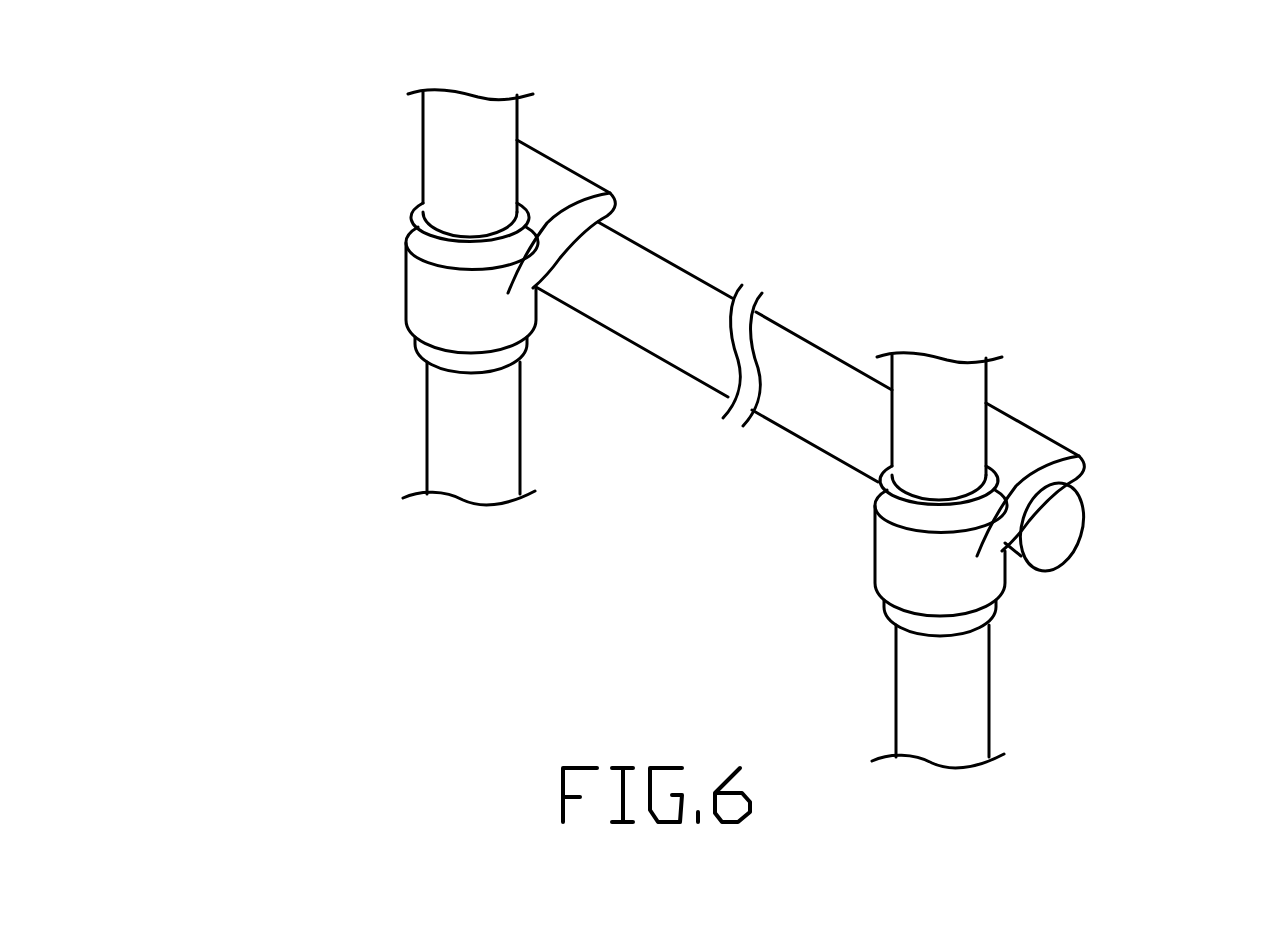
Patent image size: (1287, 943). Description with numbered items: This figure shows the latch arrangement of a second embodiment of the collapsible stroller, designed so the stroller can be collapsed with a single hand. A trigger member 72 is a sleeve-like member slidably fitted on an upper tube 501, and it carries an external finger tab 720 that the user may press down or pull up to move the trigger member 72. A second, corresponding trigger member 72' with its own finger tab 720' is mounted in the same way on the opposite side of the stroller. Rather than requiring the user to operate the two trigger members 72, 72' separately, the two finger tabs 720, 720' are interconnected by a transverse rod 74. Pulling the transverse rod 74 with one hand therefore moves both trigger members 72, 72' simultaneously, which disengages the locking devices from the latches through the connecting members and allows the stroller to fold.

The finger tab 720' is at (629, 157).
The trigger member 72' is at (366, 283).
The transverse rod 74 is at (787, 337).
The finger tab 720 is at (1086, 418).
The trigger member 72 is at (861, 551).
The upper tube 501 is at (982, 705).